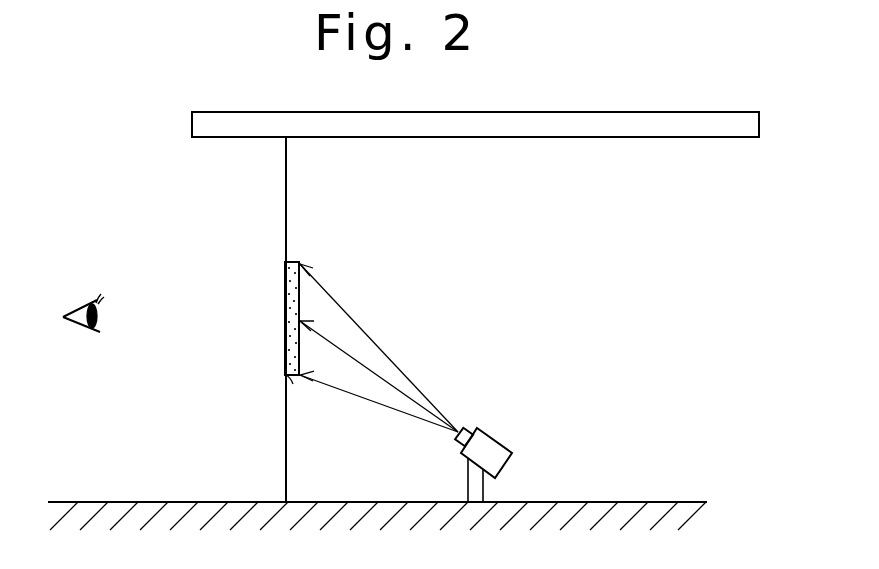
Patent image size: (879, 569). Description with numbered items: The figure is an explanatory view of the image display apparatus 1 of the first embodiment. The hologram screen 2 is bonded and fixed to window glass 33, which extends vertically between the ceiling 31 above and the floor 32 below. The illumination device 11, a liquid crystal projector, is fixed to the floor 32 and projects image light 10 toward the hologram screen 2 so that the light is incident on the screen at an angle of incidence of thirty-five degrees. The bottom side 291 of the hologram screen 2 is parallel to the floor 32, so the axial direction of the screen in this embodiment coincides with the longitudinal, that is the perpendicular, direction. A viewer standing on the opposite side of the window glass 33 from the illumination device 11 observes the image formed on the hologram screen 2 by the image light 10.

The image display apparatus 1 is at (413, 298).
The hologram screen 2 is at (297, 258).
The image light 10 is at (395, 368).
The illumination device 11 is at (515, 440).
The ceiling 31 is at (680, 127).
The floor 32 is at (653, 512).
The window glass 33 is at (286, 455).
The bottom side 291 is at (285, 383).